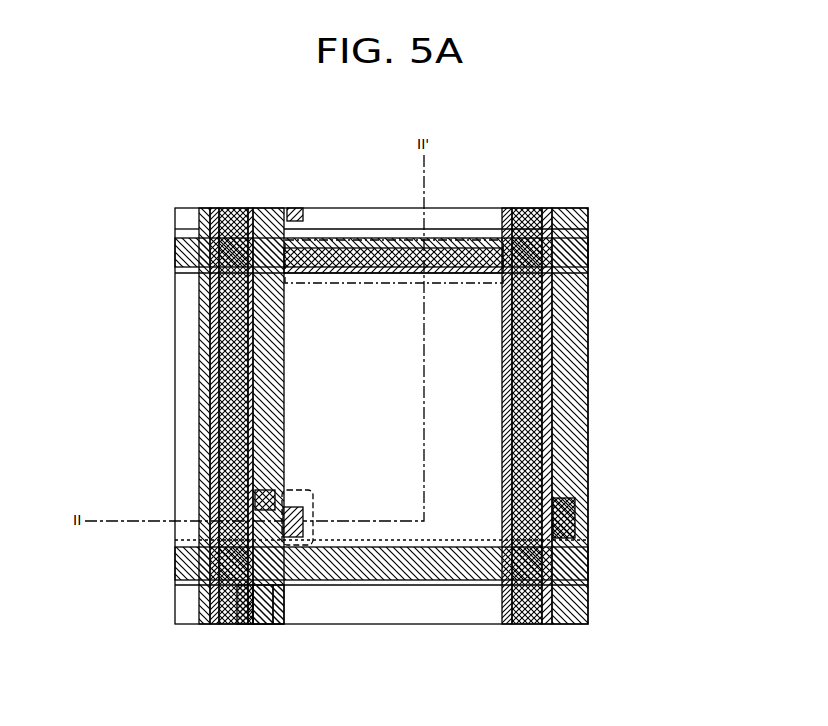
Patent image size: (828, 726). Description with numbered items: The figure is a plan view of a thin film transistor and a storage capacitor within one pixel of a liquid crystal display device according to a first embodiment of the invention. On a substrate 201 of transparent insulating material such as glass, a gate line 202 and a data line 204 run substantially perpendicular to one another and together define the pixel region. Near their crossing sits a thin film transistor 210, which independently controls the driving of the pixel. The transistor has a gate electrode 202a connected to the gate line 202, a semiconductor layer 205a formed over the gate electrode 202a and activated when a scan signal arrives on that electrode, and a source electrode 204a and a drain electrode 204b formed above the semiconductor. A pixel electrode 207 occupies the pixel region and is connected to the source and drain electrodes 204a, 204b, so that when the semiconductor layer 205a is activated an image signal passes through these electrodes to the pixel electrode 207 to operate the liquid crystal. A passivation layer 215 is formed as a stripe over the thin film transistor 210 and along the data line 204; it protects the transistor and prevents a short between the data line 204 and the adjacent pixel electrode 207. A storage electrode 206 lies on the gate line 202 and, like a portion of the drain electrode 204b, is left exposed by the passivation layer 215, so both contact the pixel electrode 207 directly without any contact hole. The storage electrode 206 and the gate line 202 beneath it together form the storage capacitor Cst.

The substrate 201 is at (588, 465).
The gate line 202 is at (178, 253).
The gate electrode 202a is at (268, 496).
The data line 204 is at (548, 355).
The source electrode 204a is at (251, 600).
The drain electrode 204b is at (285, 585).
The semiconductor layer 205a is at (276, 600).
The storage electrode 206 is at (471, 246).
The pixel electrode 207 is at (558, 313).
The thin film transistor 210 is at (200, 547).
The passivation layer 215 is at (199, 355).
The storage capacitor Cst is at (588, 258).